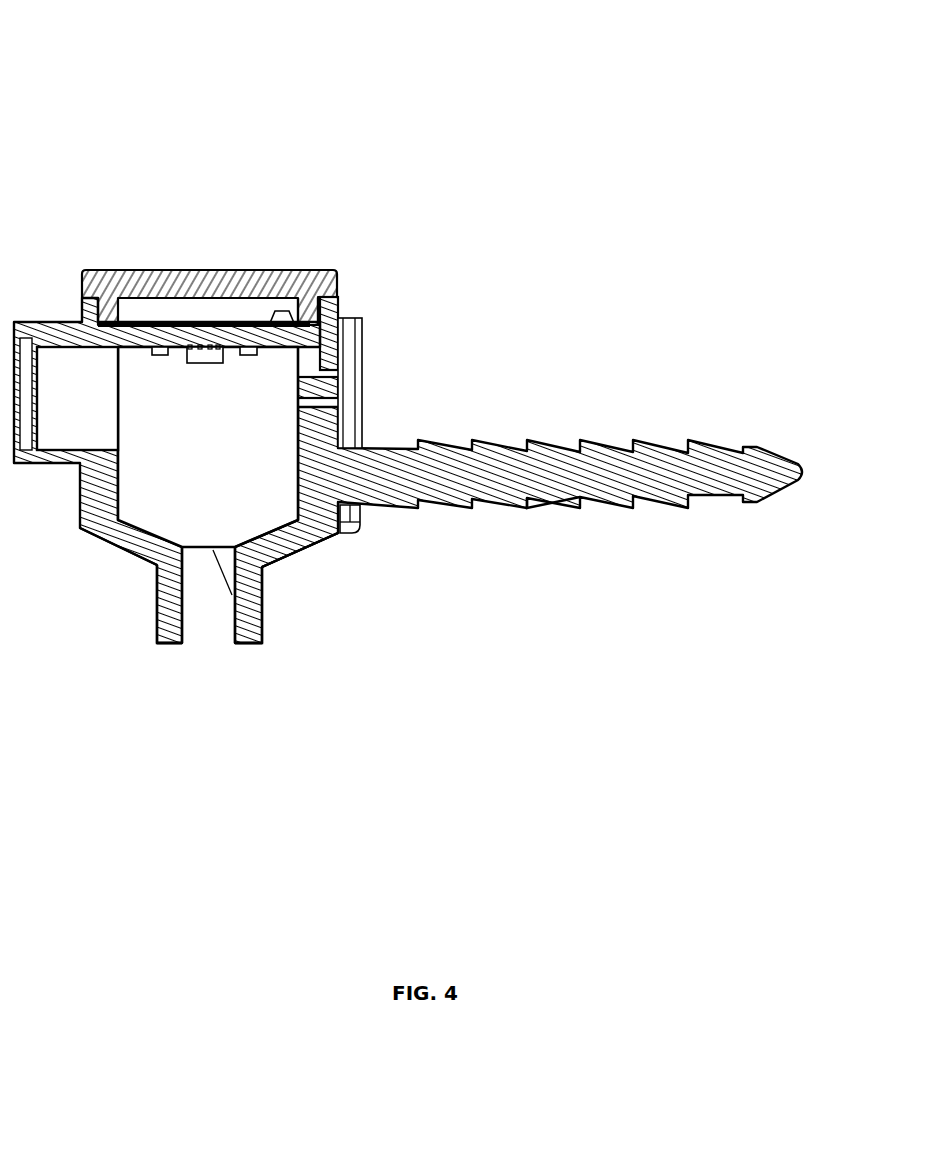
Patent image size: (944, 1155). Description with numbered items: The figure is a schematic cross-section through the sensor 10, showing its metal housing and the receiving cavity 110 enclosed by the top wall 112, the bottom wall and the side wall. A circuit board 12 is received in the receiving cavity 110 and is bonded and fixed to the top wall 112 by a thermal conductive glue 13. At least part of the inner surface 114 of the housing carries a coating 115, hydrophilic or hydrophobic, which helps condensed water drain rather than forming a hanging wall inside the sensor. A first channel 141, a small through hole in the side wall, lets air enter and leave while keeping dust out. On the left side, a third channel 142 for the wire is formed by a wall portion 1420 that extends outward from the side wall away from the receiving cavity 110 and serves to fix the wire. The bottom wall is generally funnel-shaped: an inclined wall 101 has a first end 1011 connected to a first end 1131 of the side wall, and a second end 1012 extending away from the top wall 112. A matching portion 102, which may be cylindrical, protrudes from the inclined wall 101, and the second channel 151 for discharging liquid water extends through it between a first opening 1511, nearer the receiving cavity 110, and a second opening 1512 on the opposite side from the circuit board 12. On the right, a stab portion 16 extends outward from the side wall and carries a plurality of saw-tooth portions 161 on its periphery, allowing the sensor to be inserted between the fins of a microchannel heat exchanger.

The sensor 10 is at (411, 429).
The circuit board 12 is at (193, 323).
The thermal conductive glue 13 is at (233, 325).
The top wall 112 is at (318, 298).
The inner surface 114 is at (342, 343).
The coating 115 is at (342, 363).
The first channel 141 is at (342, 400).
The receiving cavity 110 is at (270, 465).
The first end of the side wall 1131 is at (358, 533).
The first end of the inclined wall 1011 is at (330, 537).
The inclined wall 101 is at (315, 543).
The second end of the inclined wall 1012 is at (293, 560).
The first opening 1511 is at (262, 597).
The second channel 151 is at (207, 600).
The second opening 1512 is at (192, 647).
The matching portion 102 is at (155, 643).
The third channel 142 is at (55, 383).
The wall portion 1420 is at (24, 465).
The stab portion 16 is at (690, 470).
The saw-tooth portions 161 is at (538, 500).